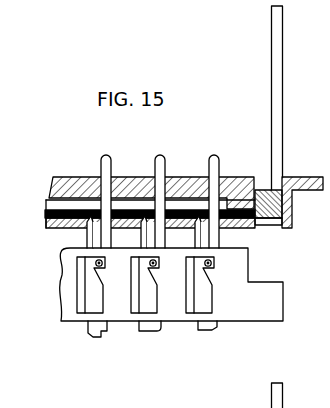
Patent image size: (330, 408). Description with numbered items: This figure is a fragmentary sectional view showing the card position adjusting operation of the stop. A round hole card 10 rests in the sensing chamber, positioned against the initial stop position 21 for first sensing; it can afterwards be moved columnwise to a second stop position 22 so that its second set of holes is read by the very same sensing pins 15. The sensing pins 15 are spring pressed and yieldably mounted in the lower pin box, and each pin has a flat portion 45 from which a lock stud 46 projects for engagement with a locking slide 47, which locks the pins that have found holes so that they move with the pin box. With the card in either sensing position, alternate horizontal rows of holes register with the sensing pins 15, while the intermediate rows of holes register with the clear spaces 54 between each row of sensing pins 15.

The round hole card 10 is at (56, 213).
The sensing pins 15 is at (160, 156).
The initial stop position 21 is at (273, 190).
The second stop position 22 is at (290, 215).
The flat portions 45 is at (205, 332).
The lock studs 46 is at (213, 265).
The locking slides 47 is at (266, 302).
The clear spaces 54 is at (169, 207).